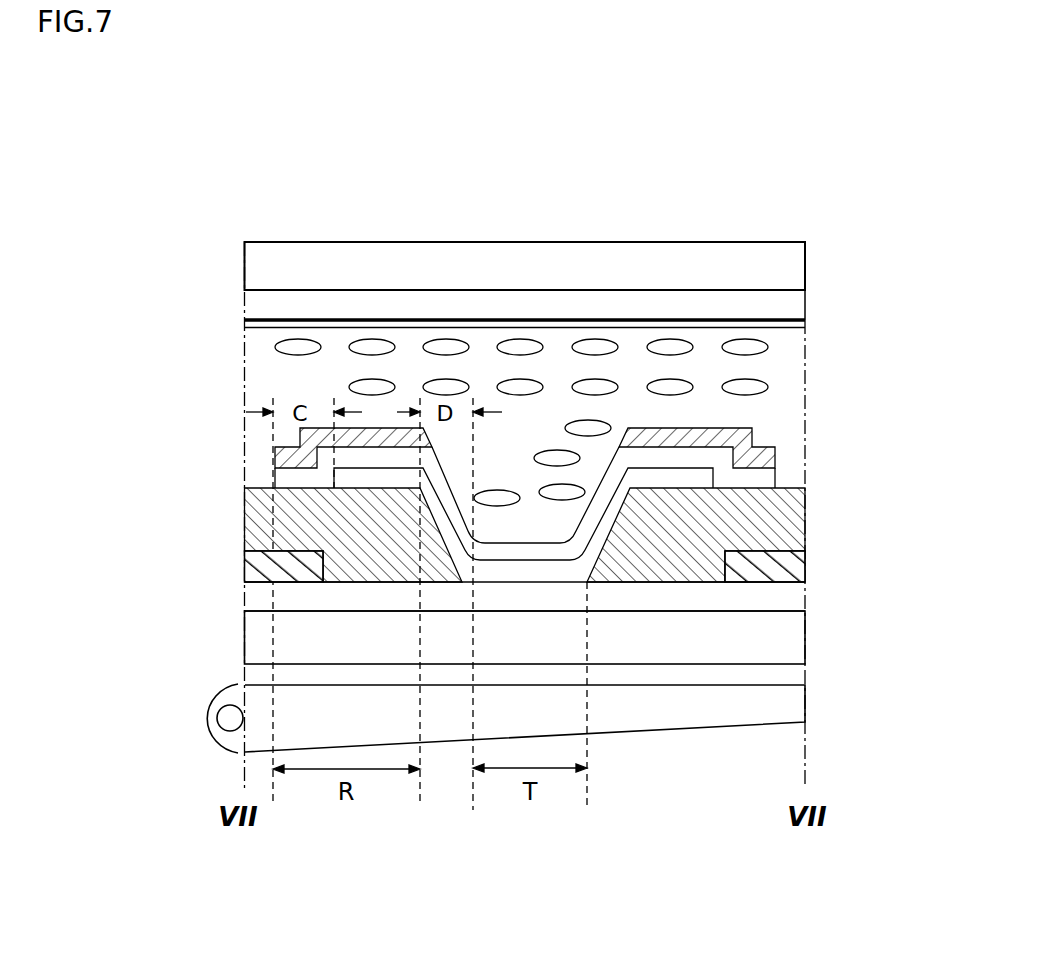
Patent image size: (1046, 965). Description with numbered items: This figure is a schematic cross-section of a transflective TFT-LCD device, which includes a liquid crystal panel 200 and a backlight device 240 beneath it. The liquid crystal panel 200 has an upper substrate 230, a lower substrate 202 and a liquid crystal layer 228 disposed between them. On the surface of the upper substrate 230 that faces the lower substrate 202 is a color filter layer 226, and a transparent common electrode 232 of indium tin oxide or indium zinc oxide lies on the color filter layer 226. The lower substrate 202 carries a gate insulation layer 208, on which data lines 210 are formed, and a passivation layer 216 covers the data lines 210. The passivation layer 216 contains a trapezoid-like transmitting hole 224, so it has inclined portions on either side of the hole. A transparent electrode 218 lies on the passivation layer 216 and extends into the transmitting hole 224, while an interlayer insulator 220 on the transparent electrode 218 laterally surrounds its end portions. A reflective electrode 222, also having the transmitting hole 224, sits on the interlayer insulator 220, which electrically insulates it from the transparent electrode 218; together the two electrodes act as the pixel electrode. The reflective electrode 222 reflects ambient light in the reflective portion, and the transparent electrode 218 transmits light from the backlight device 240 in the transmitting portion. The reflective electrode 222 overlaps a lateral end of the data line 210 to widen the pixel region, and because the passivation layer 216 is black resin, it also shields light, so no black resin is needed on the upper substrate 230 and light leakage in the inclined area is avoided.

The liquid crystal panel 200 is at (698, 206).
The lower substrate 202 is at (525, 637).
The gate insulation layer 208 is at (785, 596).
The data lines 210 is at (245, 552).
The passivation layer 216 is at (762, 526).
The transparent electrode 218 is at (707, 481).
The interlayer insulator 220 is at (720, 460).
The reflective electrode 222 is at (702, 437).
The transmitting hole 224 is at (525, 478).
The color filter layer 226 is at (263, 307).
The liquid crystal layer 228 is at (233, 332).
The upper substrate 230 is at (525, 266).
The transparent common electrode 232 is at (777, 320).
The backlight device 240 is at (793, 704).